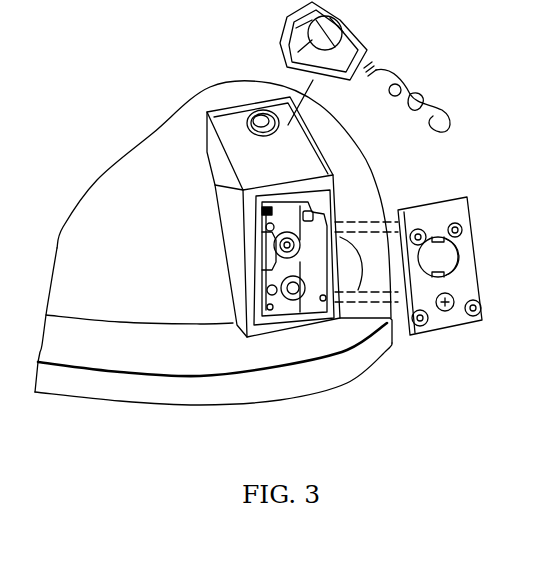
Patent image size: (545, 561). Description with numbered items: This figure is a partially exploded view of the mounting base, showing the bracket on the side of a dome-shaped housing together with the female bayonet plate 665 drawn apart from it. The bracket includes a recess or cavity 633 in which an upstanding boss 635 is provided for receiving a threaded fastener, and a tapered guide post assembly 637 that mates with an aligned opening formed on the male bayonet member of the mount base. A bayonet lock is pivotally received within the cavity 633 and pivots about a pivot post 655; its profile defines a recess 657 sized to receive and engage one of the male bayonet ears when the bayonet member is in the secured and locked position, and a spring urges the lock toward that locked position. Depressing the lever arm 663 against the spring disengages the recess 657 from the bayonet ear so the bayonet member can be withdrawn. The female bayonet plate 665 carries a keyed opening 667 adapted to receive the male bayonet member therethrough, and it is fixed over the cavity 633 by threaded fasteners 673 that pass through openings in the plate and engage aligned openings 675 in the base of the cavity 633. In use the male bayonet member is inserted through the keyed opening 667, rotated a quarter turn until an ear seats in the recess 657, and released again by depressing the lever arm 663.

The recess or cavity 633 is at (297, 268).
The upstanding boss 635 is at (295, 293).
The tapered guide post assembly 637 is at (298, 250).
The pivot post 655 is at (271, 294).
The recess 657 is at (268, 250).
The lever arm 663 is at (334, 198).
The female bayonet plate 665 is at (462, 196).
The keyed opening 667 is at (458, 258).
The threaded fasteners 673 is at (457, 229).
The aligned openings 675 is at (307, 215).